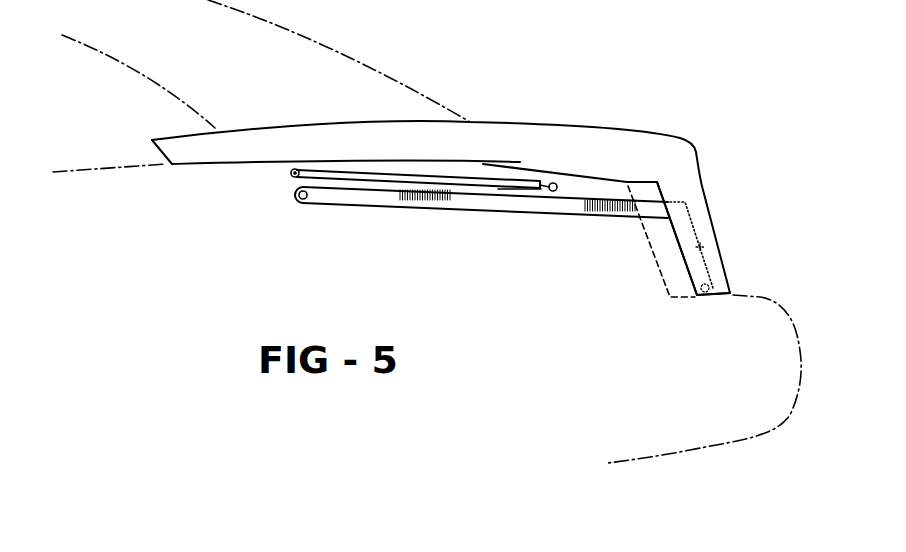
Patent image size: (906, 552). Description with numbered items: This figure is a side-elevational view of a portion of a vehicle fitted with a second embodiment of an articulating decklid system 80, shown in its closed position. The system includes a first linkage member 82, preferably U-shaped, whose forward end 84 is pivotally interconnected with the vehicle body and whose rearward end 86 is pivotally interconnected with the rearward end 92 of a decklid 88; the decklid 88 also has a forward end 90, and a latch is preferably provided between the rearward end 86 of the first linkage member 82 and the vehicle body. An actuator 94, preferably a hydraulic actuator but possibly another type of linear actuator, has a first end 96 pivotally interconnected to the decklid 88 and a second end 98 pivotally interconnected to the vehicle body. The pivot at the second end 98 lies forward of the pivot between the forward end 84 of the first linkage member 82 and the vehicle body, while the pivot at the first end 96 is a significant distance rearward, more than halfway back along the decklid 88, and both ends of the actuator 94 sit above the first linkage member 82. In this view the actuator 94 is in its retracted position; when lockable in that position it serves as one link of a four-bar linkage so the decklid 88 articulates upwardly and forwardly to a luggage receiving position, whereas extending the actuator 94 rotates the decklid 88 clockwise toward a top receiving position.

The articulating decklid system 80 is at (690, 121).
The first linkage member 82 is at (522, 212).
The forward end of first linkage member 84 is at (335, 196).
The rearward end of first linkage member 86 is at (702, 246).
The decklid 88 is at (571, 133).
The forward end of decklid 90 is at (318, 138).
The rearward end of decklid 92 is at (708, 228).
The actuator 94 is at (475, 180).
The first end of actuator 96 is at (559, 187).
The second end of actuator 98 is at (290, 173).